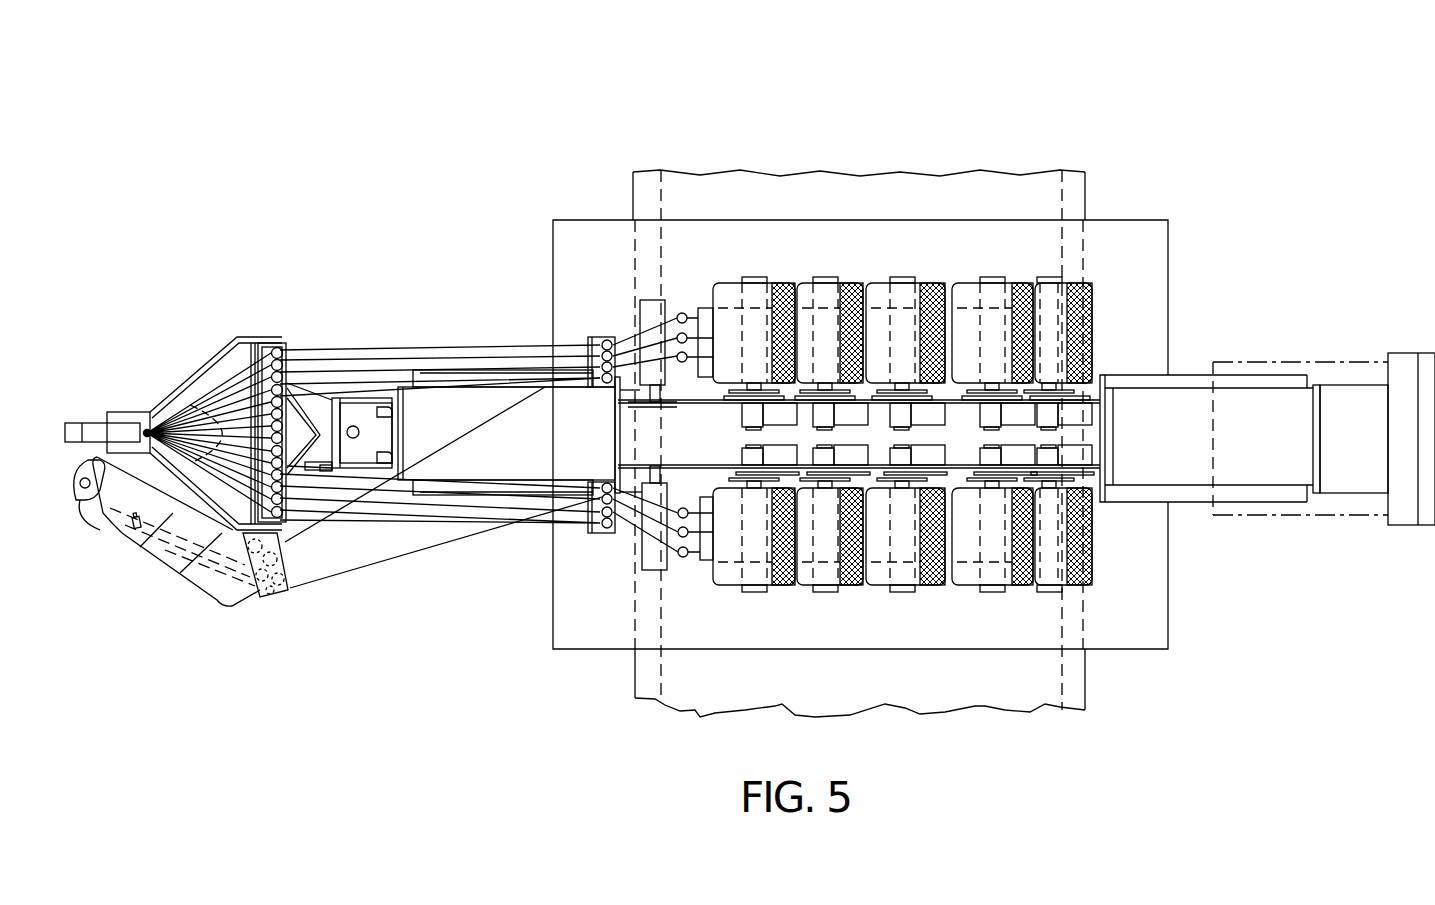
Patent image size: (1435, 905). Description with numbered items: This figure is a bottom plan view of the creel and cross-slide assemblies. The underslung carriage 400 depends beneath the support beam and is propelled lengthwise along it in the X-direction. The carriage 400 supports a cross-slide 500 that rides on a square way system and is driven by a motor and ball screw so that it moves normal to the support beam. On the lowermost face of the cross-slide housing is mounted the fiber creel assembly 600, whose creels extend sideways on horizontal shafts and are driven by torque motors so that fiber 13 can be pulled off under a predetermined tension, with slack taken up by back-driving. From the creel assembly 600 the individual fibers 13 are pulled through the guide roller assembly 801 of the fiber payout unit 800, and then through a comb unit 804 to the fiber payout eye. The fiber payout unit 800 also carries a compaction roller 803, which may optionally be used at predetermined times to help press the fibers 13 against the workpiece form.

The fiber 13 is at (430, 352).
The carriage 400 is at (548, 243).
The cross-slide 500 is at (586, 449).
The fiber creel assembly 600 is at (1096, 540).
The fiber payout unit 800 is at (187, 592).
The guide roller assembly 801 is at (273, 592).
The compaction roller 803 is at (64, 460).
The comb unit 804 is at (137, 530).